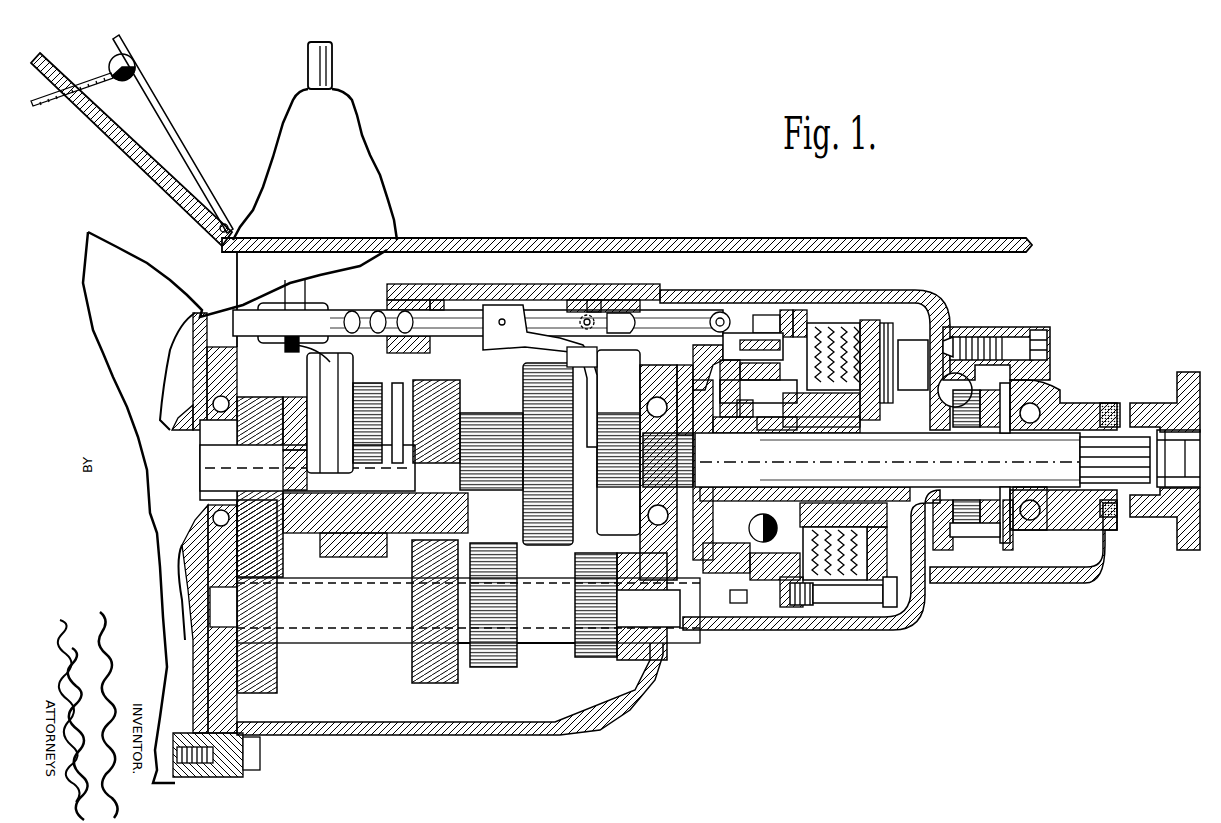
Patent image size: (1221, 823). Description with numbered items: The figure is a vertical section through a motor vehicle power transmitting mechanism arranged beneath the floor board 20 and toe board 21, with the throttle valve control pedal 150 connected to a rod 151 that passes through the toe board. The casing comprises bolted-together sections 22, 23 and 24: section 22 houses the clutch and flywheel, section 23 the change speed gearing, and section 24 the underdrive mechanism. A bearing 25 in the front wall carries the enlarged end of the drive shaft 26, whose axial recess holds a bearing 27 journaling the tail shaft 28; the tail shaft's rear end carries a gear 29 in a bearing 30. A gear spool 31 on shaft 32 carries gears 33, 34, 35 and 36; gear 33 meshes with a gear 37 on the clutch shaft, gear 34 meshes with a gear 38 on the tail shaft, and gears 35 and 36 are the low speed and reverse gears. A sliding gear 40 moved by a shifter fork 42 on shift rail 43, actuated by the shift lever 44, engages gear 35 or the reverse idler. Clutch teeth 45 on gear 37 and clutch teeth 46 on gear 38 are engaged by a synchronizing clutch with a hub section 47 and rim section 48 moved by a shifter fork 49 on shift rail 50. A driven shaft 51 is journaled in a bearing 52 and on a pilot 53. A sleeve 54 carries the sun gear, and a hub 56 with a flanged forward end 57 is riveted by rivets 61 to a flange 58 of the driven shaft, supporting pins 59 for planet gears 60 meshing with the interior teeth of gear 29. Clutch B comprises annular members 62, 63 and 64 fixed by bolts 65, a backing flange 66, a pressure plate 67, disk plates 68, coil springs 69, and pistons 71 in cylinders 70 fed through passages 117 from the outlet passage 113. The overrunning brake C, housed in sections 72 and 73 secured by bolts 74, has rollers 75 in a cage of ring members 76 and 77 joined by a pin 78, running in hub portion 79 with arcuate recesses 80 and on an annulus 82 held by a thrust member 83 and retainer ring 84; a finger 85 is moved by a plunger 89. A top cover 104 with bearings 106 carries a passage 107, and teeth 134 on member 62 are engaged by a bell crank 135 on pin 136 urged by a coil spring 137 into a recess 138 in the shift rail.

The floor board 20 is at (578, 243).
The toe board 21 is at (153, 178).
The throttle valve control pedal 150 is at (168, 120).
The rod 151 is at (42, 107).
The shift lever 44 is at (336, 69).
The casing section 22 is at (164, 297).
The casing section 23 is at (494, 736).
The casing section 24 is at (893, 630).
The bearing 25 is at (240, 390).
The drive shaft 26 is at (231, 398).
The bearing 27 is at (242, 452).
The tail shaft 28 is at (632, 505).
The gear 29 is at (710, 573).
The bearing 30 is at (647, 407).
The gear spool 31 is at (542, 645).
The shaft 32 is at (636, 600).
The gear 33 is at (280, 685).
The gear 34 is at (436, 682).
The low speed gear 35 is at (496, 670).
The reverse gear 36 is at (596, 660).
The gear 37 is at (290, 395).
The gear 38 is at (452, 382).
The gear 40 is at (521, 520).
The shifter fork 42 is at (510, 305).
The shift rail 43 is at (470, 305).
The clutch teeth 45 is at (305, 560).
The clutch teeth 46 is at (397, 383).
The hub section 47 is at (367, 395).
The rim section 48 is at (350, 545).
The shifter fork 49 is at (323, 387).
The shift rail 50 is at (372, 311).
The driven shaft 51 is at (1117, 450).
The bearing 52 is at (1055, 400).
The pilot 53 is at (758, 517).
The sleeve 54 is at (872, 425).
The hub 56 is at (835, 400).
The flanged forward end 57 is at (748, 387).
The flange 58 is at (746, 460).
The pins 59 is at (750, 330).
The planet gears 60 is at (712, 350).
The rivets 61 is at (765, 570).
The annular member 62 is at (797, 608).
The annular member 63 is at (833, 606).
The annular member 64 is at (867, 608).
The bolts 65 is at (887, 560).
The flange 66 is at (782, 593).
The pressure plate 67 is at (872, 325).
The disk plates 68 is at (914, 365).
The coil springs 69 is at (835, 325).
The cylinders 70 is at (932, 322).
The pistons 71 is at (893, 326).
The casing section 72 is at (1000, 585).
The casing section 73 is at (1043, 583).
The bolts 74 is at (1003, 326).
The overrunning brake rollers 75 is at (1036, 385).
The ring member 76 is at (950, 583).
The ring member 77 is at (990, 583).
The pin 78 is at (968, 583).
The hub portion 79 is at (985, 336).
The arcuate recesses 80 is at (966, 336).
The annulus 82 is at (972, 430).
The thrust member 83 is at (990, 430).
The retainer ring 84 is at (1007, 435).
The finger 85 is at (938, 391).
The plunger 89 is at (947, 336).
The top cover 104 is at (572, 300).
The bearings 106 is at (434, 300).
The passage 107 is at (598, 348).
The outlet passage 113 is at (935, 452).
The passages 117 is at (900, 425).
The teeth 134 is at (800, 310).
The bell crank 135 is at (788, 308).
The pin 136 is at (765, 313).
The coil spring 137 is at (720, 310).
The recess 138 is at (633, 310).
The clutch B is at (797, 605).
The overrunning brake C is at (1033, 373).